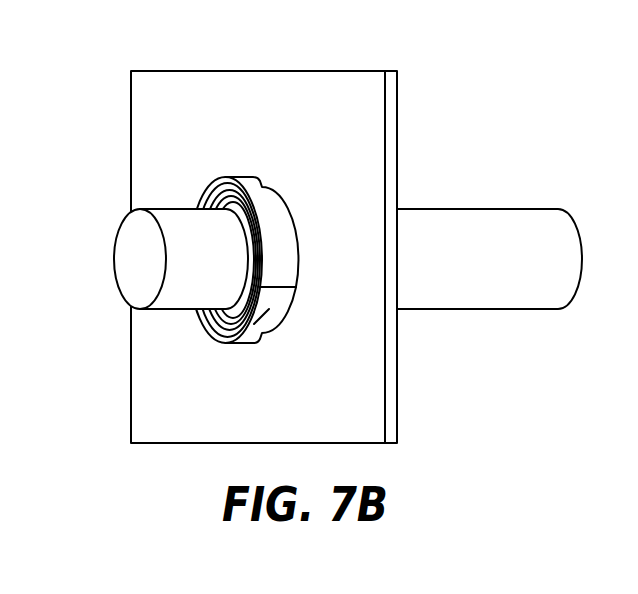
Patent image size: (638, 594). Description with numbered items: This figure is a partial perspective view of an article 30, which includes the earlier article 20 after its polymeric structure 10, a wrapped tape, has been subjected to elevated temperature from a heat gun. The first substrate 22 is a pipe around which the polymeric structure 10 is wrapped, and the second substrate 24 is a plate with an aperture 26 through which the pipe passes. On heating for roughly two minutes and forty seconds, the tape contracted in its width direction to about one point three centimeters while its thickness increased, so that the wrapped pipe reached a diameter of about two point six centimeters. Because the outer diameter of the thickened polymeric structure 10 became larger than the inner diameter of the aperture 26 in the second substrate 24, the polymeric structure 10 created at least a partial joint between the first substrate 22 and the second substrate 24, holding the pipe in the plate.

The polymeric structure 10 is at (262, 338).
The article 20 is at (223, 142).
The first substrate 22 is at (498, 223).
The second substrate 24 is at (160, 130).
The aperture 26 is at (293, 290).
The article 30 is at (452, 77).